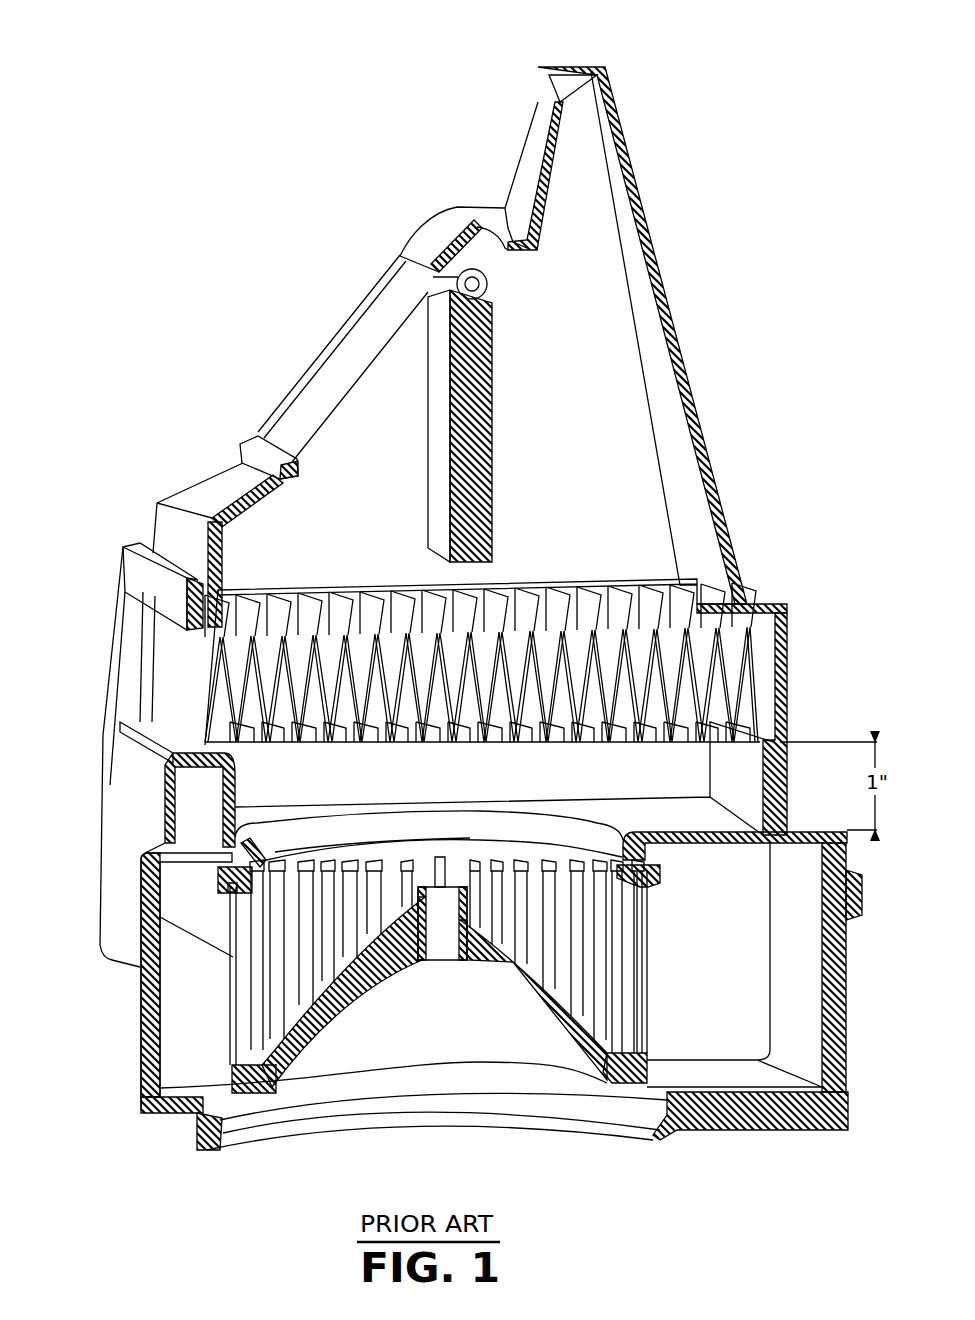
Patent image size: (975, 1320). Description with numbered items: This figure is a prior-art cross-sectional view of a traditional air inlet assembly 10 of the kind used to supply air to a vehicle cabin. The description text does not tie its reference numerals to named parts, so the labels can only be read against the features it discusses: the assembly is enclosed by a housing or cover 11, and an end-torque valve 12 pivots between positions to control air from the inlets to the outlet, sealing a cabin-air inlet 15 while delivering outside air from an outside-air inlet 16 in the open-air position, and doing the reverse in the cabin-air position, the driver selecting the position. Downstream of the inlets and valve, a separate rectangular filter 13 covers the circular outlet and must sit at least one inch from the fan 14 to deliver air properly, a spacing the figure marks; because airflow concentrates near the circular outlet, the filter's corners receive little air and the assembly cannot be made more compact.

The prior art container assembly 10 is at (346, 192).
The cover 11 is at (634, 157).
The latch lever 12 is at (567, 97).
The bellows 13 is at (305, 835).
The container body 14 is at (230, 957).
The hanging bar 15 is at (497, 428).
The latch bracket 16 is at (170, 657).